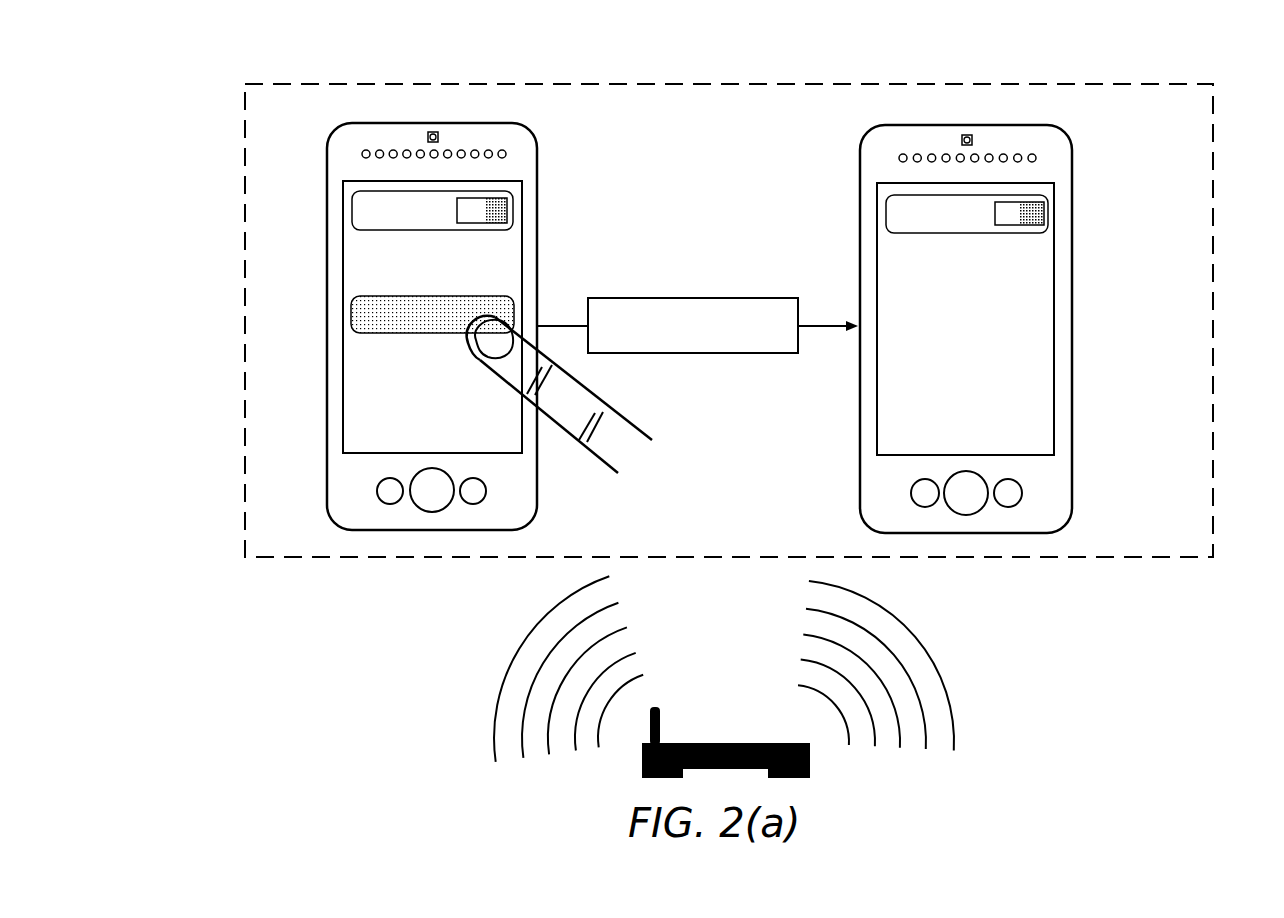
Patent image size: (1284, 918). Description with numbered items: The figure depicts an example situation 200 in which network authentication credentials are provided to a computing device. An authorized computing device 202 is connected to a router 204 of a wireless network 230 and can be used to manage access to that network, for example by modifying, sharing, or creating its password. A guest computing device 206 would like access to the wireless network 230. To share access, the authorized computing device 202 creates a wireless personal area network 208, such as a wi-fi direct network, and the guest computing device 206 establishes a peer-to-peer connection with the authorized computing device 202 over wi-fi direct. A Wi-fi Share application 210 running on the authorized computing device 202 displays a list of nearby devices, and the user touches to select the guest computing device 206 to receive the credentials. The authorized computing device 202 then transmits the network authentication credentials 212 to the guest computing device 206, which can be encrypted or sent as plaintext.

The example situation 200 is at (173, 107).
The authorized computing device 202 is at (538, 160).
The router 204 is at (728, 743).
The guest computing device 206 is at (1070, 163).
The wireless personal area network 208 is at (1215, 137).
The Wi-fi Share application 210 is at (515, 225).
The network authentication credentials 212 is at (798, 300).
The wireless network 230 is at (913, 637).